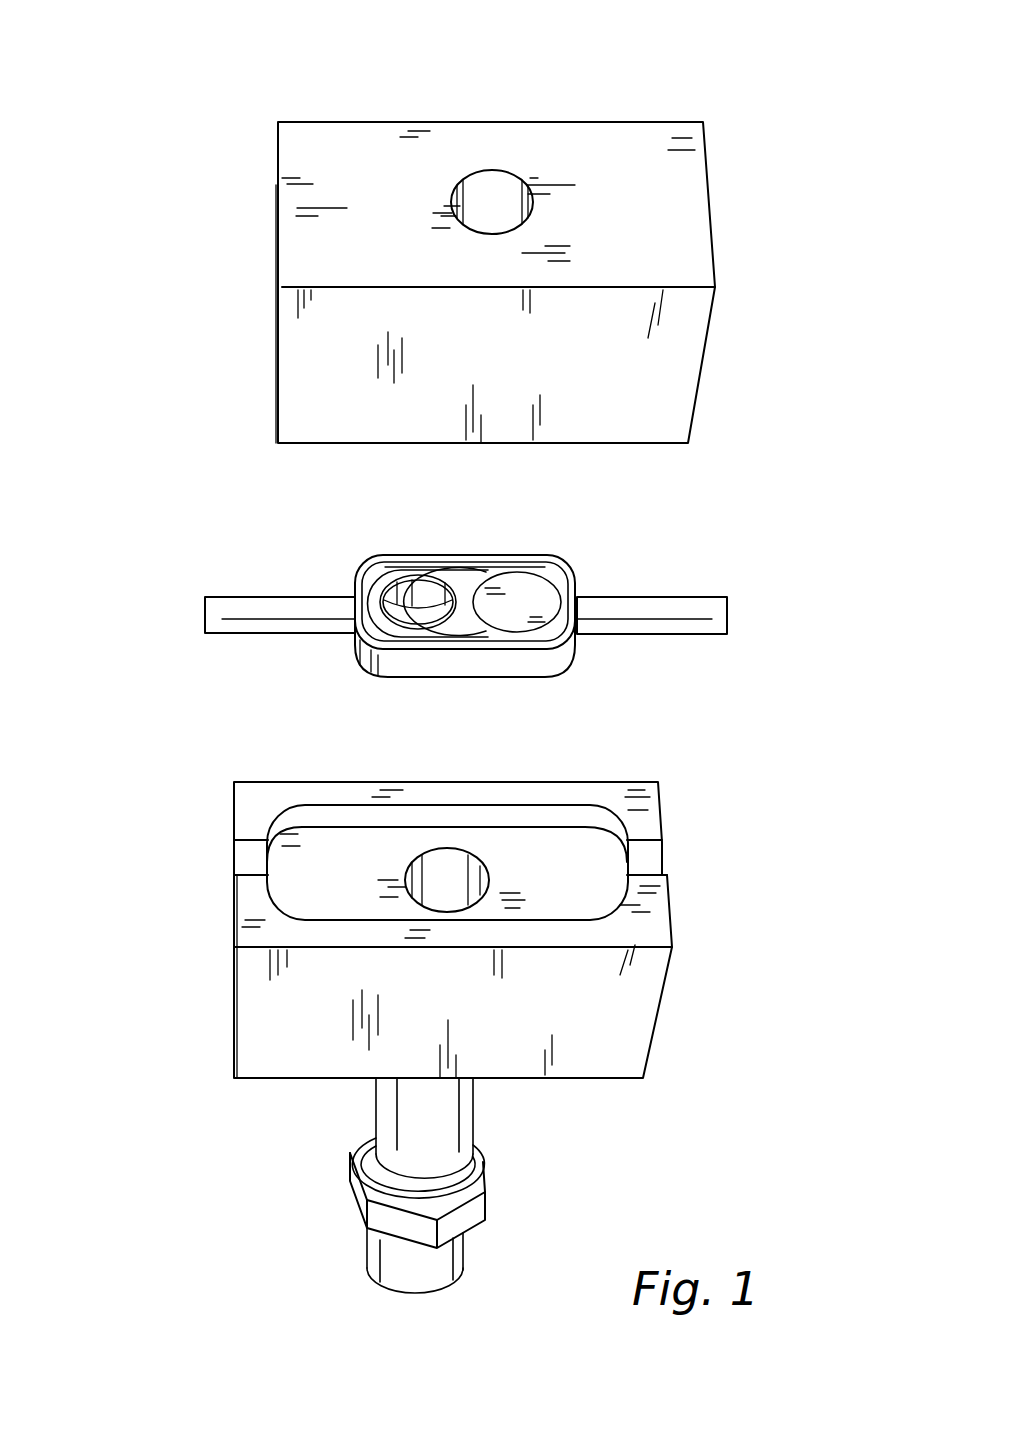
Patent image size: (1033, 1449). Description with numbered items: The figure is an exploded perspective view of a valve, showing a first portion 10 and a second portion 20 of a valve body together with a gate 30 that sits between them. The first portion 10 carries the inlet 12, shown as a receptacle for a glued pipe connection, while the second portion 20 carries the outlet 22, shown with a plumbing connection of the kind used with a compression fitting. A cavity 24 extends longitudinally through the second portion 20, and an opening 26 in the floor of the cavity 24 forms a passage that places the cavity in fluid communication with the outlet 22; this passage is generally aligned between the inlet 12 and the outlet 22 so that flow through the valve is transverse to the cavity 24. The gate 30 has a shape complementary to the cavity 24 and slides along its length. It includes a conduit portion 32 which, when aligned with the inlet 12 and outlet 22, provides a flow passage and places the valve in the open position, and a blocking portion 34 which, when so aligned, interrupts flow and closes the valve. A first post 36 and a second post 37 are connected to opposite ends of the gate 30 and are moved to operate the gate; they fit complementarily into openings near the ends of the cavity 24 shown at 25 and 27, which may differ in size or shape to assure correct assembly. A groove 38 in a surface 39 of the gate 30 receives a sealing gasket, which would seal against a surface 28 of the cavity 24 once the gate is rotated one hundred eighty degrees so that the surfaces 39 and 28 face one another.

The first portion of valve body 10 is at (183, 205).
The inlet 12 is at (507, 173).
The second portion of valve body 20 is at (95, 898).
The outlet 22 is at (367, 1204).
The cavity 24 is at (590, 920).
The opening for first post 25 is at (248, 857).
The opening 26 is at (465, 853).
The opening for second post 27 is at (645, 862).
The surface of cavity 28 is at (350, 893).
The gate 30 is at (100, 615).
The conduit portion 32 is at (422, 590).
The blocking portion 34 is at (512, 590).
The first post 36 is at (228, 620).
The second post 37 is at (705, 620).
The groove 38 is at (383, 573).
The surface of gate 39 is at (448, 628).